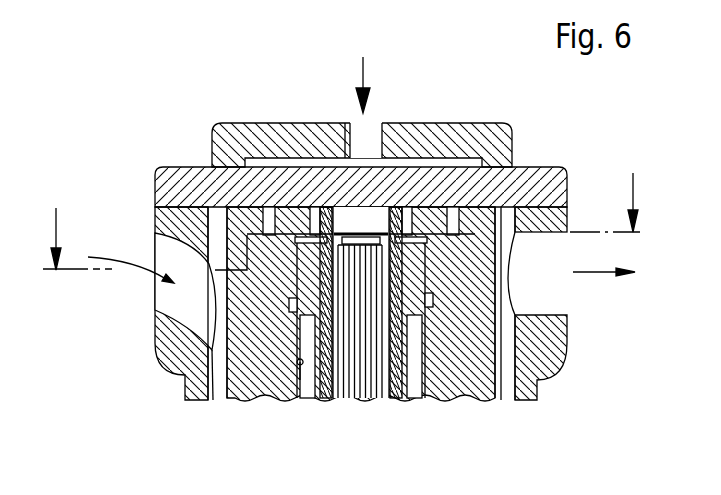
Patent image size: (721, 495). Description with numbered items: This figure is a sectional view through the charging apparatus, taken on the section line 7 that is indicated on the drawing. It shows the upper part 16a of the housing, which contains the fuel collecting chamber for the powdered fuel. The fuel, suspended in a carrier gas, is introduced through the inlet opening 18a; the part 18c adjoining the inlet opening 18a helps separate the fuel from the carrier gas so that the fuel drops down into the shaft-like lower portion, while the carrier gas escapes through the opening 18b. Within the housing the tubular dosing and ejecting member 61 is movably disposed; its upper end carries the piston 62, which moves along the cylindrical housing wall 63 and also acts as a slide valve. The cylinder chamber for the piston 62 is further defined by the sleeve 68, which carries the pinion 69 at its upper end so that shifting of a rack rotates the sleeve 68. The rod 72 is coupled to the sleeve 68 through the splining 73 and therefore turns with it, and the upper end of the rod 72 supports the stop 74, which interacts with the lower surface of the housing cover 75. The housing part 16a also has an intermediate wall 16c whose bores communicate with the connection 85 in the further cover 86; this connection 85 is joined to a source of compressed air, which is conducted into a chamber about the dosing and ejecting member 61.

The section line 7- 7 is at (341, 228).
The upper part of housing 16a is at (557, 337).
The intermediate wall 16c is at (255, 398).
The inlet opening 18a is at (158, 309).
The opening 18b is at (552, 311).
The part adjoining the inlet opening 18c is at (218, 397).
The tubular dosing and ejecting member 61 is at (311, 389).
The piston 62 is at (303, 291).
The cylindrical housing wall 63 is at (298, 361).
The sleeve 68 is at (393, 398).
The pinion 69 is at (432, 212).
The rod 72 is at (356, 399).
The splining 73 is at (352, 396).
The stop 74 is at (352, 226).
The housing cover 75 is at (547, 183).
The connection 85 is at (372, 128).
The further cover 86 is at (480, 128).